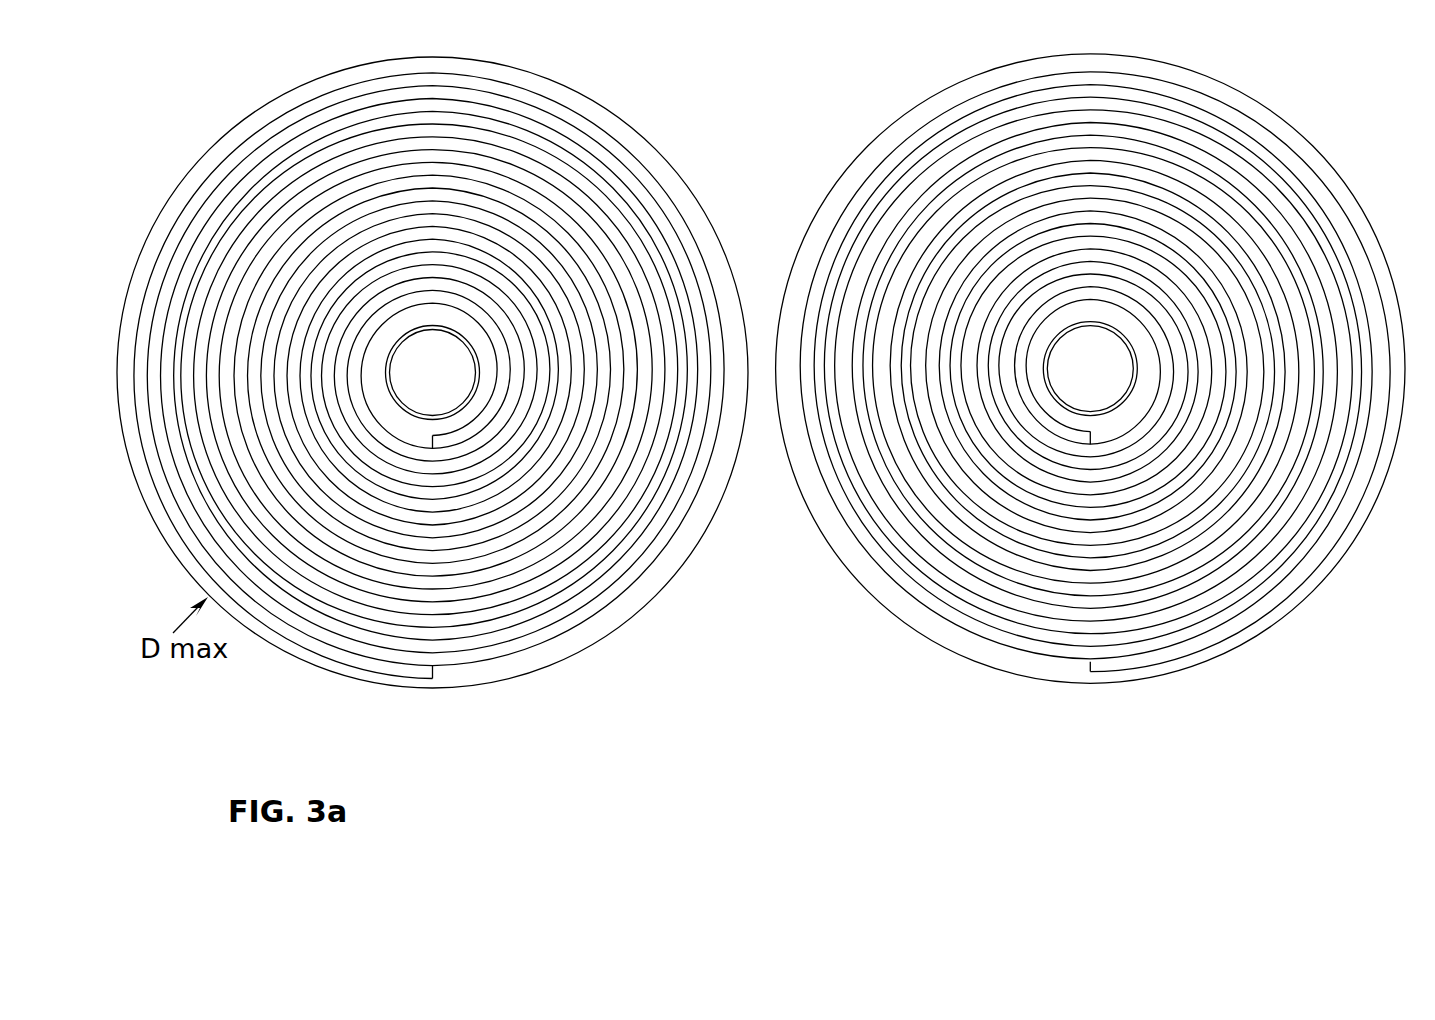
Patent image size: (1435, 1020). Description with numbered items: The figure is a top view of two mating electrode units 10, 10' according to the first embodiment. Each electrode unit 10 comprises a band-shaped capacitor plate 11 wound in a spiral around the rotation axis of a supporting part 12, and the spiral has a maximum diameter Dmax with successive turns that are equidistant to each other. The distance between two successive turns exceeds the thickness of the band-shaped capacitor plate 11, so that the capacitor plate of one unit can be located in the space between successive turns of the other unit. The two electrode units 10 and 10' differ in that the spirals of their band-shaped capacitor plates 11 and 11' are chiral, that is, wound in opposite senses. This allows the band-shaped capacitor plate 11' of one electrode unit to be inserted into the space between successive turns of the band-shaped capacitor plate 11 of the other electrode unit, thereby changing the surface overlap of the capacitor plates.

The electrode unit 10 is at (485, 402).
The electrode unit 10' is at (1114, 394).
The band-shaped capacitor plate 11 is at (429, 407).
The band-shaped capacitor plate 11' is at (1095, 409).
The supporting part 12 is at (642, 592).